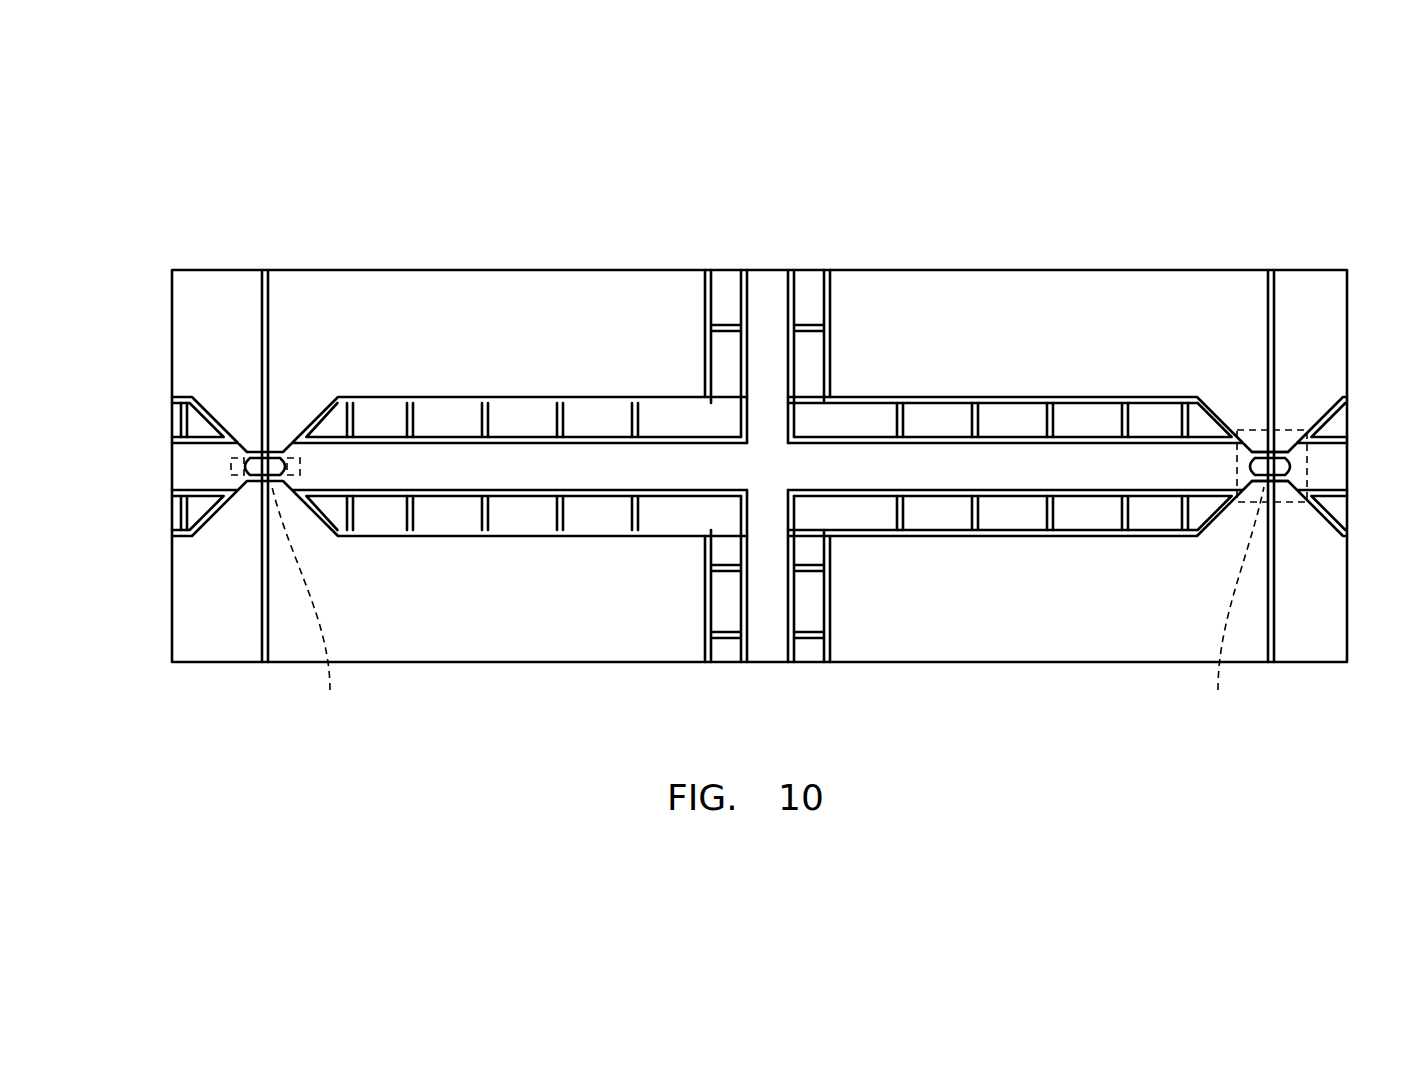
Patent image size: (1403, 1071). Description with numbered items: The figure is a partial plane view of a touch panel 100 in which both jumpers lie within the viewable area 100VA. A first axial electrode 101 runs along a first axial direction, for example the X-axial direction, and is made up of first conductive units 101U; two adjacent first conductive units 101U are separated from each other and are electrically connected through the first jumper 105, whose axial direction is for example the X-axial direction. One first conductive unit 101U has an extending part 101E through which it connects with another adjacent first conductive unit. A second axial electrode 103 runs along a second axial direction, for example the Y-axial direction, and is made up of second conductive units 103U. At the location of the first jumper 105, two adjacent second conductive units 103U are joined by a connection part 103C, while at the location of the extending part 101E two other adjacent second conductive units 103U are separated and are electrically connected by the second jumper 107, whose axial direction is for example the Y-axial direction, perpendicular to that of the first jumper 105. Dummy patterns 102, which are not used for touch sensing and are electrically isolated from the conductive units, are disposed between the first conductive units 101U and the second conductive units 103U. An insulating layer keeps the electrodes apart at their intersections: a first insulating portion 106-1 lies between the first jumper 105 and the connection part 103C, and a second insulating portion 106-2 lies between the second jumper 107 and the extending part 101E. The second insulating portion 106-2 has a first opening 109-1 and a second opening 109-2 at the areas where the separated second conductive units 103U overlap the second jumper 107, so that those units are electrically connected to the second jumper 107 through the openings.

The touch panel 100 is at (1103, 163).
The viewable area 100VA is at (1158, 258).
The first axial electrode 101 is at (163, 473).
The first conductive unit 101U is at (186, 458).
The extending part 101E is at (1245, 466).
The dummy pattern 102 is at (668, 512).
The second axial electrode 103 is at (241, 258).
The second conductive unit 103U is at (200, 284).
The connection part 103C is at (257, 487).
The first jumper 105 is at (302, 467).
The first insulating portion 106-1 is at (319, 603).
The second insulating portion 106-2 is at (1223, 603).
The second jumper 107 is at (1280, 430).
The first opening 109-1 is at (1258, 443).
The second opening 109-2 is at (1258, 492).